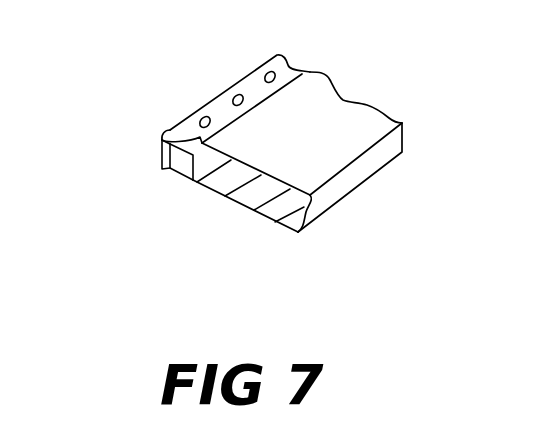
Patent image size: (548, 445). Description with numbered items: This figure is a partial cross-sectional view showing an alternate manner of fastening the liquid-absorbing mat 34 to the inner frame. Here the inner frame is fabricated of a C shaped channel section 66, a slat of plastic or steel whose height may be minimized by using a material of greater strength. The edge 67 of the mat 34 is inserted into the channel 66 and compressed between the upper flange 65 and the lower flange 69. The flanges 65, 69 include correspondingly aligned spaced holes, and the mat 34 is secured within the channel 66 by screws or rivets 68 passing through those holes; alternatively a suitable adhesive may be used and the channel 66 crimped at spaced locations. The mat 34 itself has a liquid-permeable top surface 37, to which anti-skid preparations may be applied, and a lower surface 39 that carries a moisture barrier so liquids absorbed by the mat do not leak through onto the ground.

The liquid-absorbing mat 34 is at (386, 156).
The top surface 37 is at (343, 103).
The lower surface 39 is at (268, 216).
The upper flange 65 is at (162, 141).
The C shaped channel section 66 is at (188, 125).
The edge of the mat 67 is at (160, 167).
The rivets 68 is at (238, 95).
The lower flange 69 is at (180, 176).